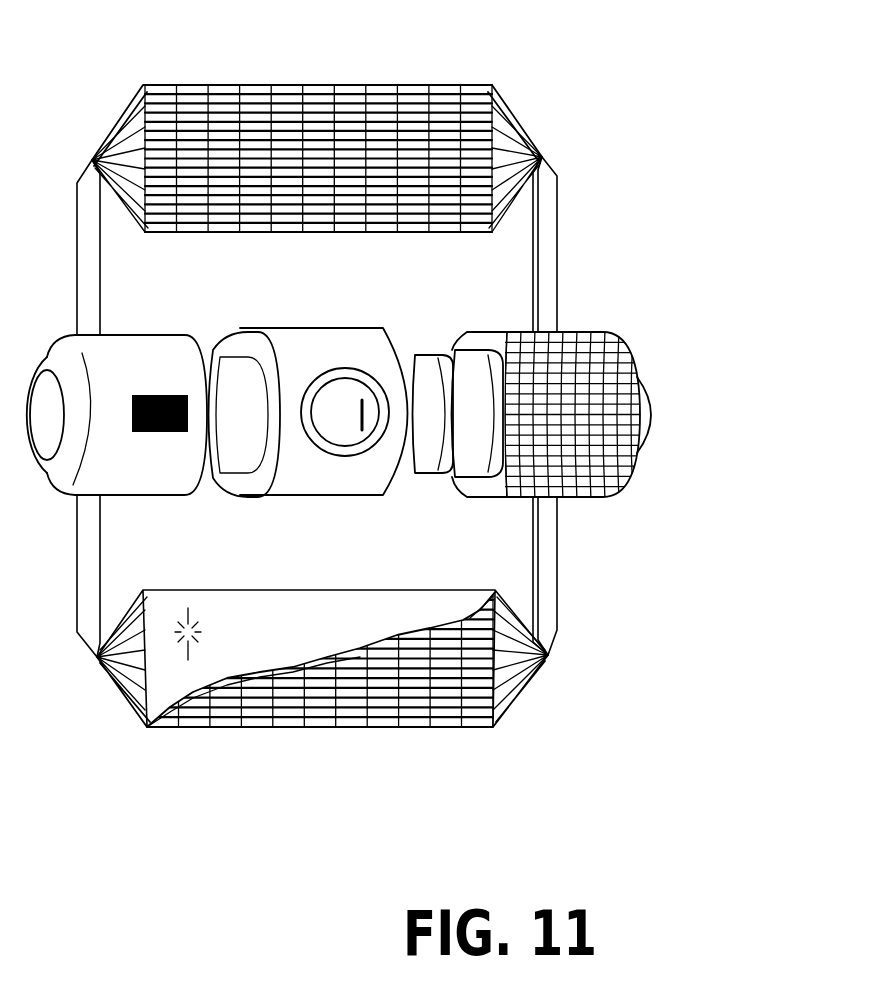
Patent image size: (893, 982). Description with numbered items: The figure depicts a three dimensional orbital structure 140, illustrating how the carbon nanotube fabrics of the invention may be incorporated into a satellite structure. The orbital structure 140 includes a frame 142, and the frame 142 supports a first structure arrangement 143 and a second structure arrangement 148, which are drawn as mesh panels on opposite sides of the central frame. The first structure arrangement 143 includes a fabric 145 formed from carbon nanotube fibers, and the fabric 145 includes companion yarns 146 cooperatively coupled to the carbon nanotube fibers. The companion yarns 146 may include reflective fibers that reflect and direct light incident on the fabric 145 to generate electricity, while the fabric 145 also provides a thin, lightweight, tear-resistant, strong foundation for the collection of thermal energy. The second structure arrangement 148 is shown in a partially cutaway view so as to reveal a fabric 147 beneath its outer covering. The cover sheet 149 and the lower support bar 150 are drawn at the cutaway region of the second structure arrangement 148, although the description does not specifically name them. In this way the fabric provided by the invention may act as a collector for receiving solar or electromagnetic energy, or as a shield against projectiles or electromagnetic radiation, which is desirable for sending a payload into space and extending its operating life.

The three dimensional orbital structure 140 is at (712, 117).
The frame 142 is at (548, 250).
The first structure arrangement 143 is at (512, 77).
The fabric 145 is at (415, 82).
The companion yarns 146 is at (440, 82).
The fabric 147 is at (380, 723).
The second structure arrangement 148 is at (130, 742).
The cover sheet 149 is at (315, 605).
The lower support bar 150 is at (223, 727).